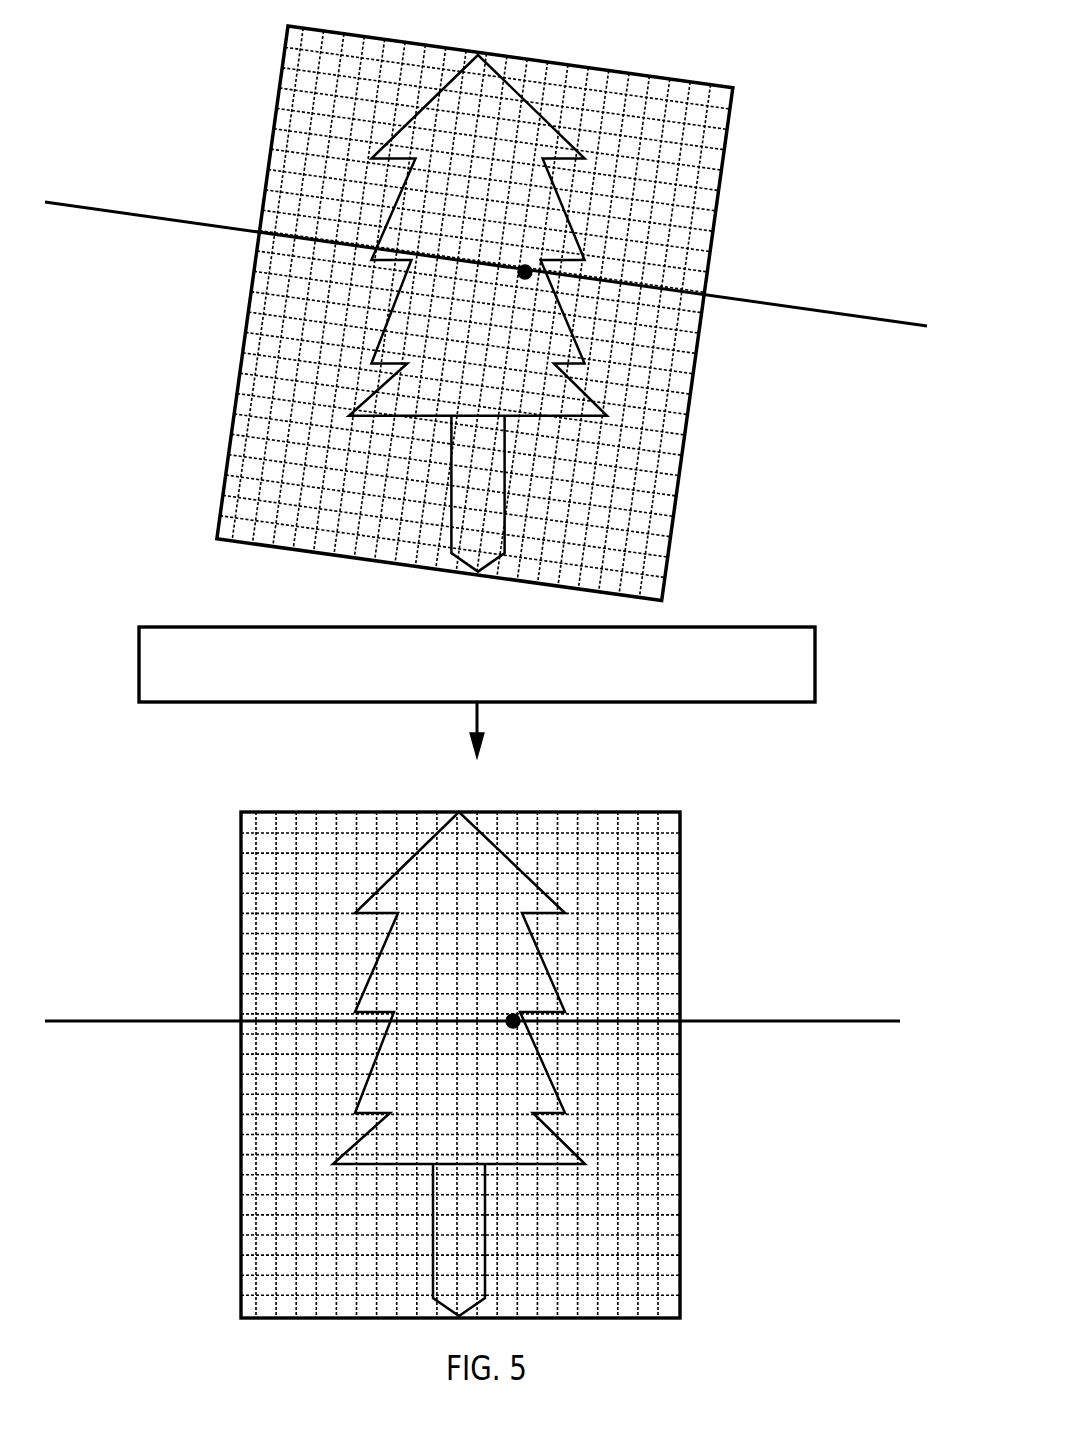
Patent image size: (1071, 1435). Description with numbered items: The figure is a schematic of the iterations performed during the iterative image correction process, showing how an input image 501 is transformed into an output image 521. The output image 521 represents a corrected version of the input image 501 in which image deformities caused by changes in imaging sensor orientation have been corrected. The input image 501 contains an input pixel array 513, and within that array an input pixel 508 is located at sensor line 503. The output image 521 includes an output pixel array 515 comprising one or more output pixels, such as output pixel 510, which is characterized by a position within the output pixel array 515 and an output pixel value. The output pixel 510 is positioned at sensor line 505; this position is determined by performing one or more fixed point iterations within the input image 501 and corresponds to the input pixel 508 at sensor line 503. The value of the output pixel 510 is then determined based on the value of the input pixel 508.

The input image 501 is at (857, 55).
The sensor line 503 is at (812, 377).
The sensor line 505 is at (820, 1090).
The input pixel 508 is at (525, 272).
The output pixel 510 is at (513, 1021).
The input pixel array 513 is at (588, 147).
The output pixel array 515 is at (585, 894).
The output image 521 is at (798, 775).